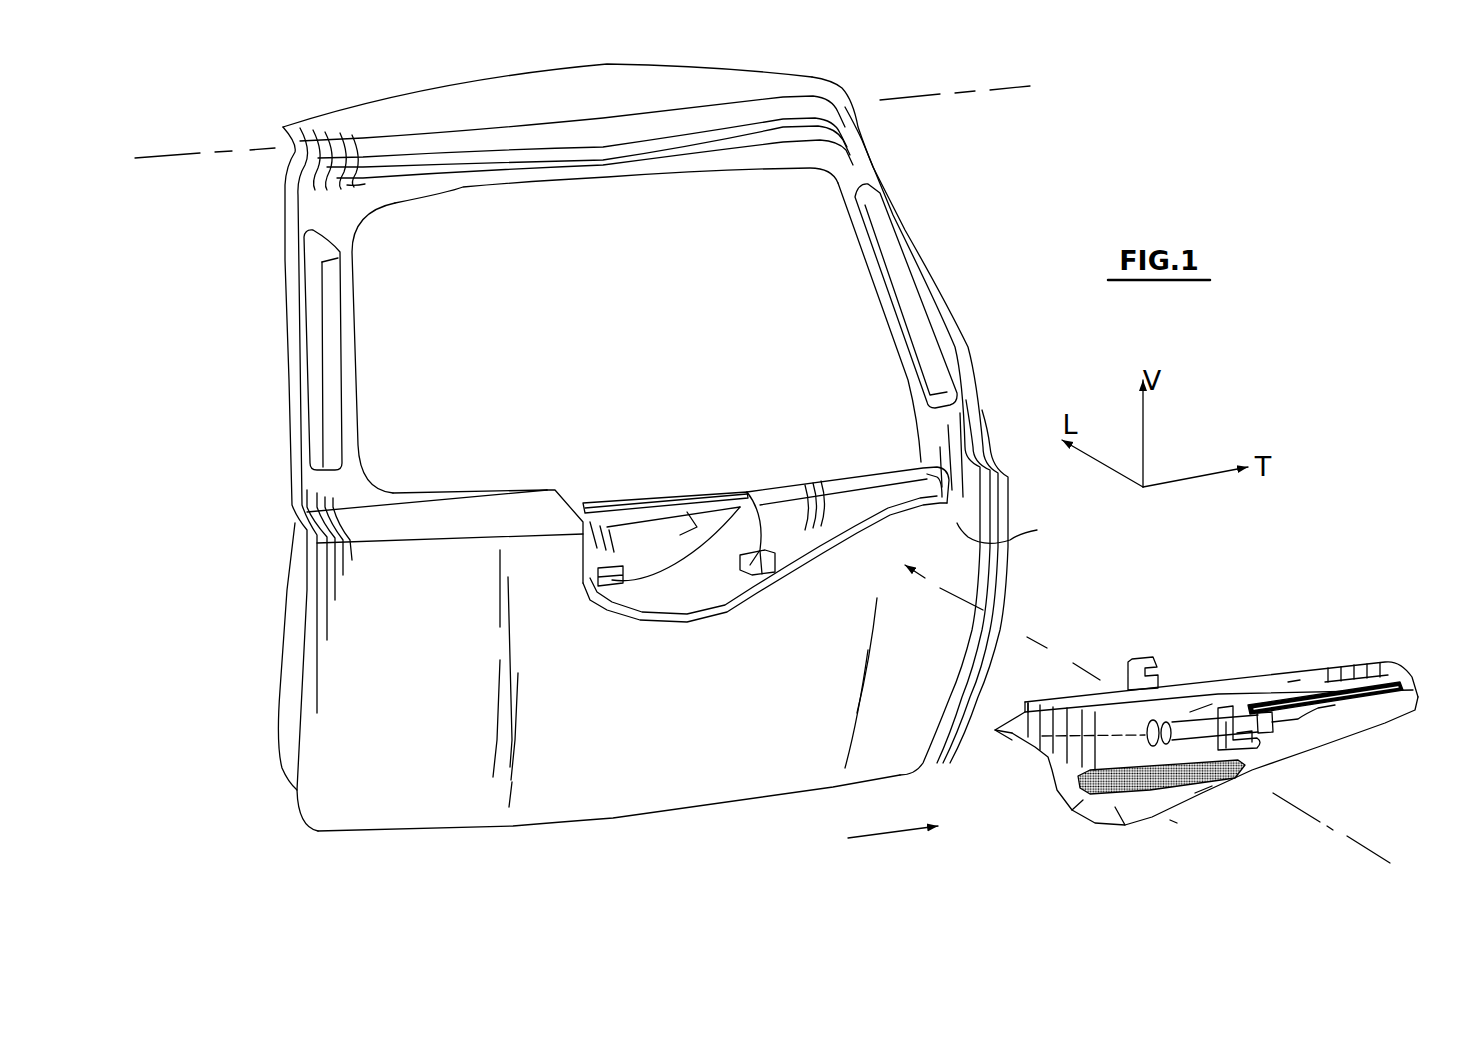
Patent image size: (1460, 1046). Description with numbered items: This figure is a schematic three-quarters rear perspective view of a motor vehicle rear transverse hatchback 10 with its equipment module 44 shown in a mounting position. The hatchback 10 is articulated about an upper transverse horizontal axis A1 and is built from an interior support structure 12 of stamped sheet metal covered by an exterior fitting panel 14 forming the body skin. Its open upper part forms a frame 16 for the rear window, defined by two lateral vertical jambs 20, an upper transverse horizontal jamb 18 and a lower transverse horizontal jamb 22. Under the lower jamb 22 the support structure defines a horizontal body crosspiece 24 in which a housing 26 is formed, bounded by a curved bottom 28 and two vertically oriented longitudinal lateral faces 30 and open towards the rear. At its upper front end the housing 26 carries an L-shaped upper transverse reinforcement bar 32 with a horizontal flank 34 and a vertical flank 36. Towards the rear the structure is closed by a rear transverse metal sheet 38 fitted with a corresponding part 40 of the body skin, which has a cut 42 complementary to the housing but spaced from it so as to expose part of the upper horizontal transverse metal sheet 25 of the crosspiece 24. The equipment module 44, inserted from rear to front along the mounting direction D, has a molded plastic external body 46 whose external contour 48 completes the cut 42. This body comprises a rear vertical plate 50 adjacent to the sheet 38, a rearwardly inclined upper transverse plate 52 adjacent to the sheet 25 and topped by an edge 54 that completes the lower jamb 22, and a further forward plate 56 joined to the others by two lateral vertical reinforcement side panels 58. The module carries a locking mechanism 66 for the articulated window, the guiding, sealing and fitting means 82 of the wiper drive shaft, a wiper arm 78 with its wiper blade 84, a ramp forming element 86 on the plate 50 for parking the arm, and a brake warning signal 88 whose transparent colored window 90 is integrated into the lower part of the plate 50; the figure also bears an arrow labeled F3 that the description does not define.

The rear transverse hatchback 10 is at (985, 275).
The interior support structure 12 is at (285, 665).
The exterior fitting panel 14 is at (380, 789).
The frame 16 is at (364, 254).
The upper transverse horizontal jamb 18 is at (358, 380).
The lateral vertical jambs 20 is at (527, 180).
The lower transverse horizontal jamb 22 is at (509, 490).
The horizontal body crosspiece 24 is at (776, 488).
The upper horizontal transverse metal sheet 25 is at (835, 492).
The housing 26 is at (705, 580).
The curved bottom 28 is at (678, 588).
The longitudinal lateral faces 30 is at (630, 553).
The upper transverse reinforcement bar 32 is at (612, 495).
The horizontal flank 34 is at (700, 490).
The vertical flank 36 is at (670, 538).
The rear transverse metal sheet 38 is at (787, 530).
The corresponding part of the body skin 40 is at (1013, 529).
The cut 42 is at (873, 503).
The equipment module 44 is at (1412, 677).
The external body 46 is at (1115, 807).
The external contour 48 is at (1177, 823).
The rear vertical plate 50 is at (1083, 800).
The upper transverse plate 52 is at (1192, 710).
The edge 54 is at (1292, 680).
The plate 56 is at (1024, 703).
The lateral vertical reinforcement side panels 58 is at (1020, 740).
The locking mechanism 66 is at (1154, 655).
The wiper arm 78 is at (1203, 752).
The means of guiding in rotation, sealing and fitting 82 is at (1135, 713).
The wiper blade 84 is at (1362, 684).
The ramp forming element 86 is at (1260, 752).
The brake warning signal 88 is at (1222, 765).
The transparent colored window 90 is at (1147, 797).
The upper transverse horizontal axis A1 is at (905, 96).
The mounting direction D is at (1350, 838).
The viewing direction F3 is at (893, 819).